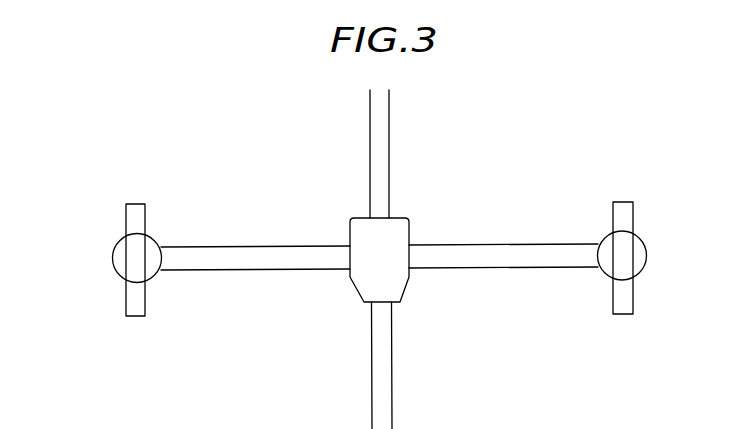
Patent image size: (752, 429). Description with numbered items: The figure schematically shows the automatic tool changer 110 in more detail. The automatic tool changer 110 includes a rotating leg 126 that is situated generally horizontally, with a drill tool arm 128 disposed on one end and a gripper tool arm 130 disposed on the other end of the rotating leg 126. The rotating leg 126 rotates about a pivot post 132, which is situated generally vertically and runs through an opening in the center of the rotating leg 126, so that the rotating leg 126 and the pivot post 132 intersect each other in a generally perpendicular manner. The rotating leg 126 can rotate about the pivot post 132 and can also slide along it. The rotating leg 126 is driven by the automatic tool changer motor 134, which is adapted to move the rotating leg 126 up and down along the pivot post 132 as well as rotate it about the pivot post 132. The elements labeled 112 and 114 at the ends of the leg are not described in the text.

The automatic tool changer 110 is at (257, 148).
The first end plate 112 is at (125, 223).
The second end plate 114 is at (638, 207).
The rotating leg 126 is at (483, 208).
The drill tool arm 128 is at (113, 265).
The gripper tool arm 130 is at (648, 242).
The pivot post 132 is at (373, 125).
The automatic tool changer motor 134 is at (362, 236).